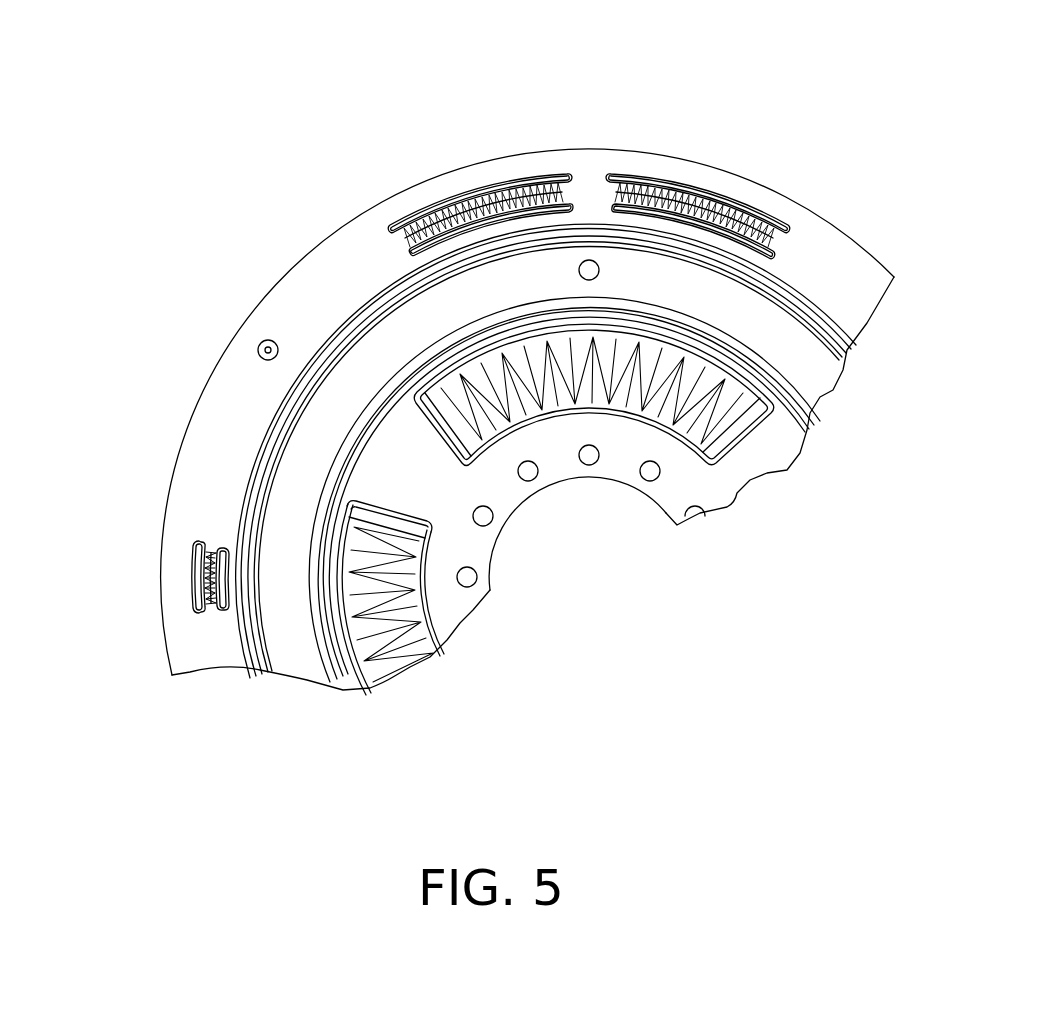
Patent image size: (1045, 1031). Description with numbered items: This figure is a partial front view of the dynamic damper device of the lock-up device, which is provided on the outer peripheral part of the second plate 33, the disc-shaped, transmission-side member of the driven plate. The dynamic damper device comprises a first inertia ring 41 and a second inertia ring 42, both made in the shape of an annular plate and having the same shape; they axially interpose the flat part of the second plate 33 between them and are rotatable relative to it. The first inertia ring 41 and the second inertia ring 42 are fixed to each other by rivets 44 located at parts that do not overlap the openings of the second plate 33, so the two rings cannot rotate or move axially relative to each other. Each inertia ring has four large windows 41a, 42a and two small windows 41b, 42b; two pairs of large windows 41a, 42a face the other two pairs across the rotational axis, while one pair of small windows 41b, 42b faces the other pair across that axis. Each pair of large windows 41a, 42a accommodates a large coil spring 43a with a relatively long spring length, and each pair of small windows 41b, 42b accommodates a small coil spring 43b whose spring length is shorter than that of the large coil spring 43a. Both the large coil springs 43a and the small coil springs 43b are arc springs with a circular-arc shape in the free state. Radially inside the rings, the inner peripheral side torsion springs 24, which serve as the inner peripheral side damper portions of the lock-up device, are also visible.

The first inertia ring 41 is at (345, 222).
The second inertia ring 42 is at (527, 378).
The large window 41a is at (633, 166).
The large window 42a is at (589, 131).
The small window 41b is at (190, 557).
The small window 42b is at (140, 488).
The large coil spring 43a is at (490, 195).
The small coil spring 43b is at (210, 583).
The rivet 44 is at (268, 340).
The inner peripheral side torsion spring 24 is at (400, 640).
The second plate 33 is at (737, 485).